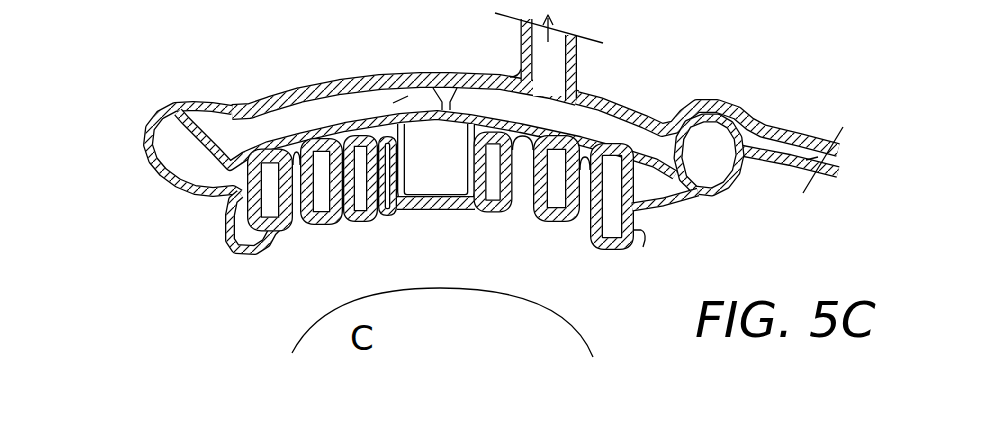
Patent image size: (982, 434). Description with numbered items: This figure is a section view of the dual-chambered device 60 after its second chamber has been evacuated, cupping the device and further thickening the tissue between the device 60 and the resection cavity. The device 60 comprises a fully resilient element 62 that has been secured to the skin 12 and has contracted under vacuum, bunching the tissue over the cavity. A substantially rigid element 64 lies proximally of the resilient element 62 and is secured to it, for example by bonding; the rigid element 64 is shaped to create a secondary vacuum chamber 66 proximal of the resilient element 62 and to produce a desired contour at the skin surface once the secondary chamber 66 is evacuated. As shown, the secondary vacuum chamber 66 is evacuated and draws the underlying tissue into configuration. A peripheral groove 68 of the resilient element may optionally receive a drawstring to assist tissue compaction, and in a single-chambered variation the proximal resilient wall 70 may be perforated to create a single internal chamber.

The dual-chambered embodiment 60 is at (313, 58).
The resilient element 62 is at (205, 219).
The skin 12 is at (253, 254).
The secondary vacuum chamber 66 is at (431, 70).
The rigid element 64 is at (633, 108).
The proximal resilient wall 70 is at (566, 130).
The peripheral groove 68 is at (640, 218).